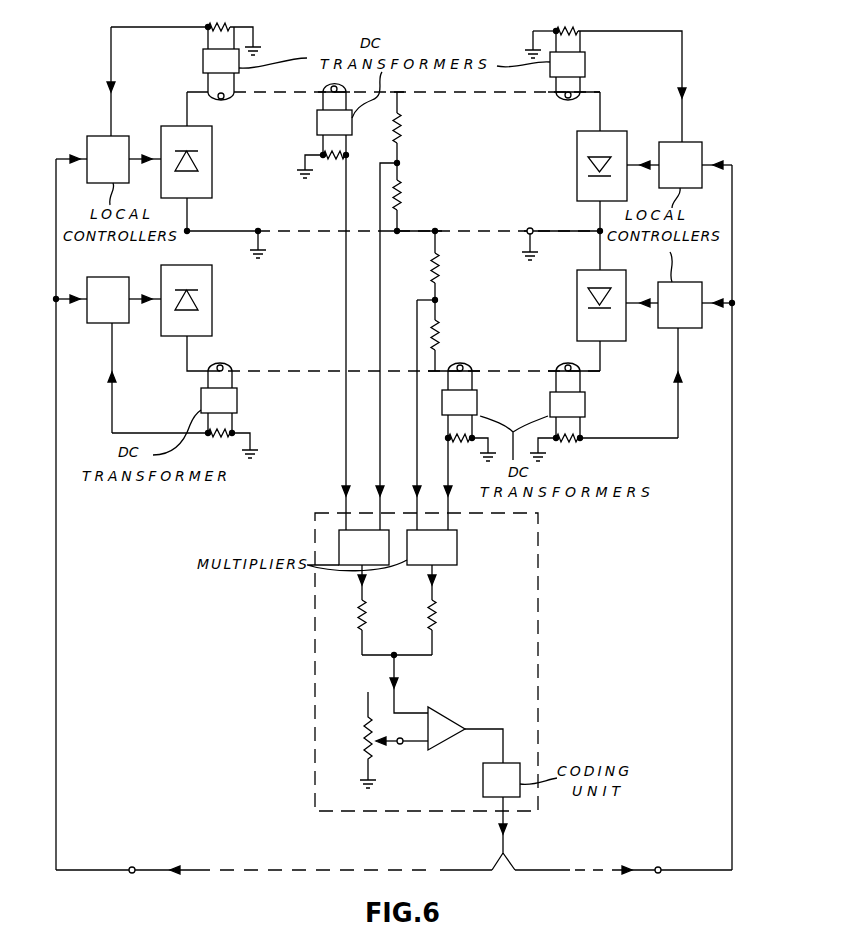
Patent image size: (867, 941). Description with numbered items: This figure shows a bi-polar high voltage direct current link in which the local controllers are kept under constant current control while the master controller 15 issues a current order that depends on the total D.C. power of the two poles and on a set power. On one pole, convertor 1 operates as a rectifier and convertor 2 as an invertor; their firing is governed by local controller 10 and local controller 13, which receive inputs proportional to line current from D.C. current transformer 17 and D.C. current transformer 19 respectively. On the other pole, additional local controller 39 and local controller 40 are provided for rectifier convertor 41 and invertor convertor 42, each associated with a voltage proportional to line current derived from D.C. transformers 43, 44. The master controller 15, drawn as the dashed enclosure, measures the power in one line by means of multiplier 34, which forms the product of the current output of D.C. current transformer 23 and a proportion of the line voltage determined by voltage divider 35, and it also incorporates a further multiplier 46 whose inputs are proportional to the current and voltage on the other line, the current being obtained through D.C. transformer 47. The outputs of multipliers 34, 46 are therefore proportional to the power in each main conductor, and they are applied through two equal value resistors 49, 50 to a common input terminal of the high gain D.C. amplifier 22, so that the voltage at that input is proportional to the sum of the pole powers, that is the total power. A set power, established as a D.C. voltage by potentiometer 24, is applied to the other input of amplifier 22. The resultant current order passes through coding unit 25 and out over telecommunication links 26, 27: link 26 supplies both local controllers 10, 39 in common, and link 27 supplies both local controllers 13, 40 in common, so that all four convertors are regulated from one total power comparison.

The convertor 1 is at (216, 310).
The convertor 2 is at (554, 313).
The local controller 10 is at (99, 310).
The local controller 13 is at (671, 315).
The master controller 15 is at (540, 575).
The D.C. current transformer 17 is at (237, 403).
The D.C. current transformer 19 is at (585, 405).
The high gain D.C. amplifier 22 is at (449, 709).
The D.C. current transformer 23 is at (477, 405).
The potentiometer 24 is at (364, 736).
The coding unit 25 is at (492, 792).
The telecommunication link 26 is at (222, 866).
The telecommunication link 27 is at (606, 868).
The multiplier circuit 34 is at (423, 558).
The voltage divider 35 is at (442, 309).
The local controller 39 is at (99, 171).
The local controller 40 is at (671, 175).
The convertor 41 is at (217, 169).
The convertor 42 is at (547, 174).
The D.C. transformer 43 is at (202, 63).
The D.C. transformer 44 is at (585, 64).
The multiplier 46 is at (355, 558).
The D.C. transformer 47 is at (317, 128).
The resistor 49 is at (332, 628).
The resistor 50 is at (444, 628).